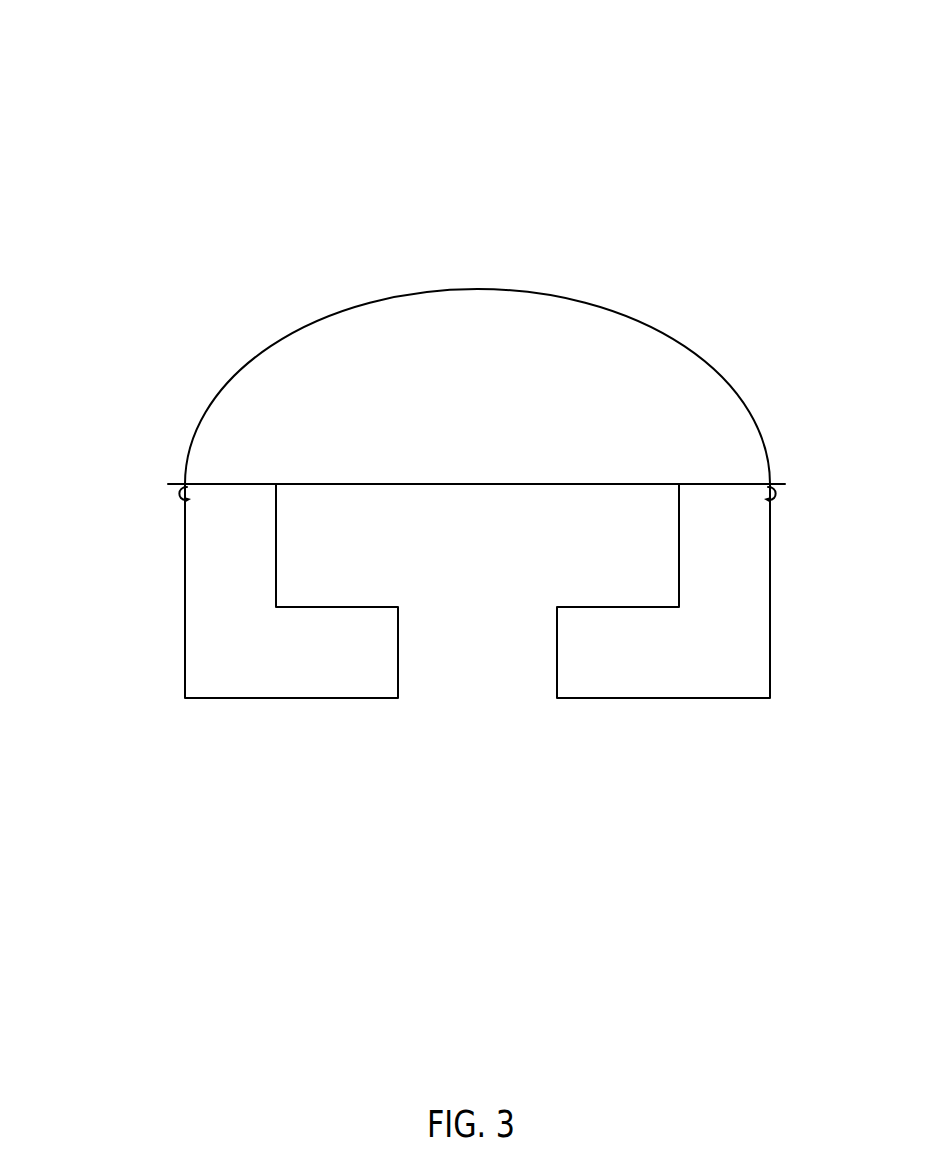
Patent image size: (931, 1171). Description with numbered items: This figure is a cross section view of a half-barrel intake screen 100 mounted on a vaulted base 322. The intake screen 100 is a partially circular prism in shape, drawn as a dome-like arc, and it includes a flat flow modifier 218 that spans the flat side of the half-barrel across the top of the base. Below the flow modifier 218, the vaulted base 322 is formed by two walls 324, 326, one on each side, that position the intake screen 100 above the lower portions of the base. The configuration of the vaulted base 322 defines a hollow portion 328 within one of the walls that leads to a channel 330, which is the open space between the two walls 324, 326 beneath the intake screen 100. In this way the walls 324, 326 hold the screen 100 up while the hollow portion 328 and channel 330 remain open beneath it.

The half-barrel intake screen 100 is at (449, 427).
The flat flow modifier 218 is at (626, 474).
The vaulted base 322 is at (449, 643).
The wall 324 is at (207, 553).
The wall 326 is at (757, 584).
The hollow portion 328 is at (579, 592).
The channel 330 is at (457, 700).